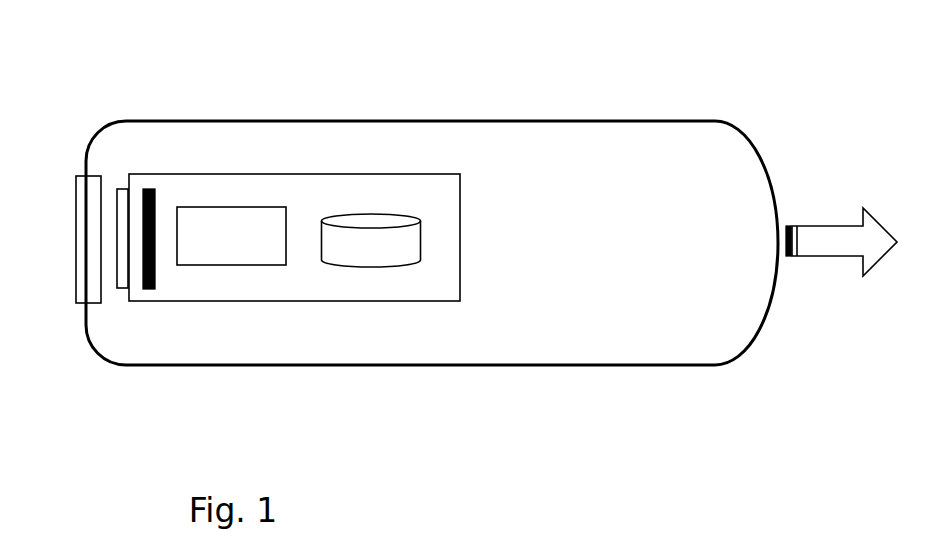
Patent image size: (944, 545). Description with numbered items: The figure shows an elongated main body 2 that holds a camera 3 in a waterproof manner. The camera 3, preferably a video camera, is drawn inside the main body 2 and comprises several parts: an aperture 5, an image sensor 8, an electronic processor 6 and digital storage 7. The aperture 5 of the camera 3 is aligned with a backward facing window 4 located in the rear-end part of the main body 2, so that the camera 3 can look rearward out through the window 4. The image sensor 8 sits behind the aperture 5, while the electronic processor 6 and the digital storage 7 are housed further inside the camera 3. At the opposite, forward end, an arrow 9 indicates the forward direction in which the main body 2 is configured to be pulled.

The elongated main body 2 is at (317, 120).
The camera 3 is at (371, 303).
The backward facing window 4 is at (70, 178).
The aperture 5 is at (123, 293).
The electronic processor 6 is at (231, 236).
The digital storage 7 is at (371, 240).
The image sensor 8 is at (154, 275).
The arrow 9 is at (838, 226).